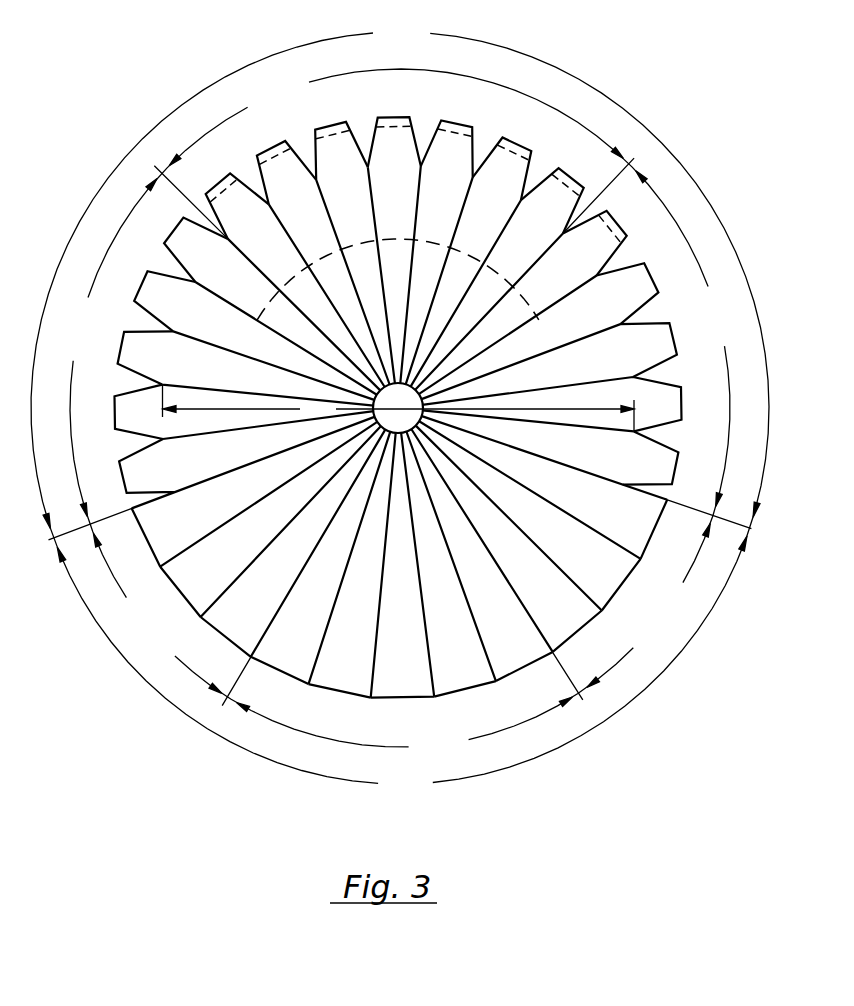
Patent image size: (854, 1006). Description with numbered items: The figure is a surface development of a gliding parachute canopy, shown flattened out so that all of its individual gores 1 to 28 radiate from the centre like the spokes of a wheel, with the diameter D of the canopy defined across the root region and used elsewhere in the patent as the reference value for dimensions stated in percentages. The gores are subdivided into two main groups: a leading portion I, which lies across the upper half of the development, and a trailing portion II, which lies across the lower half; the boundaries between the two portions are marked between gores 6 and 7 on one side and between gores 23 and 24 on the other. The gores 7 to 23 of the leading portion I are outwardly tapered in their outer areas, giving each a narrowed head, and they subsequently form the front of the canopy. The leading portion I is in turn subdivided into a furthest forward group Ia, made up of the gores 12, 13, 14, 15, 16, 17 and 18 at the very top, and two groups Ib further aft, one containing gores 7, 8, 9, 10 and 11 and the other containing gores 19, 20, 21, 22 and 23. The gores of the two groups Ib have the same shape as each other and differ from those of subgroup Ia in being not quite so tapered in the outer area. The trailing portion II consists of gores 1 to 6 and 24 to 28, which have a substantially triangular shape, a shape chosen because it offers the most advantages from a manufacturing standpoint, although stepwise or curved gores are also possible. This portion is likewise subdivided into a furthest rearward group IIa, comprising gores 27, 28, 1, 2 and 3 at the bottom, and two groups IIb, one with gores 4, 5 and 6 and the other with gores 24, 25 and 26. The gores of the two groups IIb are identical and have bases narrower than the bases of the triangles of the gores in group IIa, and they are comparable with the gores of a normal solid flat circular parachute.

The gore 1 is at (403, 565).
The gore 2 is at (352, 565).
The gore 3 is at (320, 558).
The gore 4 is at (293, 542).
The gore 5 is at (270, 521).
The gore 6 is at (255, 495).
The gore 7 is at (247, 463).
The gore 8 is at (244, 412).
The gore 9 is at (246, 368).
The gore 10 is at (254, 335).
The gore 11 is at (270, 306).
The gore 12 is at (293, 281).
The gore 13 is at (321, 264).
The gore 14 is at (352, 253).
The gore 15 is at (394, 250).
The gore 16 is at (436, 251).
The gore 17 is at (469, 261).
The gore 18 is at (497, 277).
The gore 19 is at (521, 300).
The gore 20 is at (538, 328).
The gore 21 is at (549, 361).
The gore 22 is at (551, 404).
The gore 23 is at (550, 447).
The gore 24 is at (544, 487).
The gore 25 is at (530, 516).
The gore 26 is at (509, 538).
The gore 27 is at (481, 555).
The gore 28 is at (451, 564).
The diameter D is at (399, 408).
The leading portion I is at (217, 401).
The trailing portion II is at (578, 417).
The furthest forward group of gores Ia is at (483, 178).
The groups of gores further aft Ib is at (394, 344).
The furthest rearward group of gores IIa is at (313, 710).
The groups of gores IIb is at (372, 550).